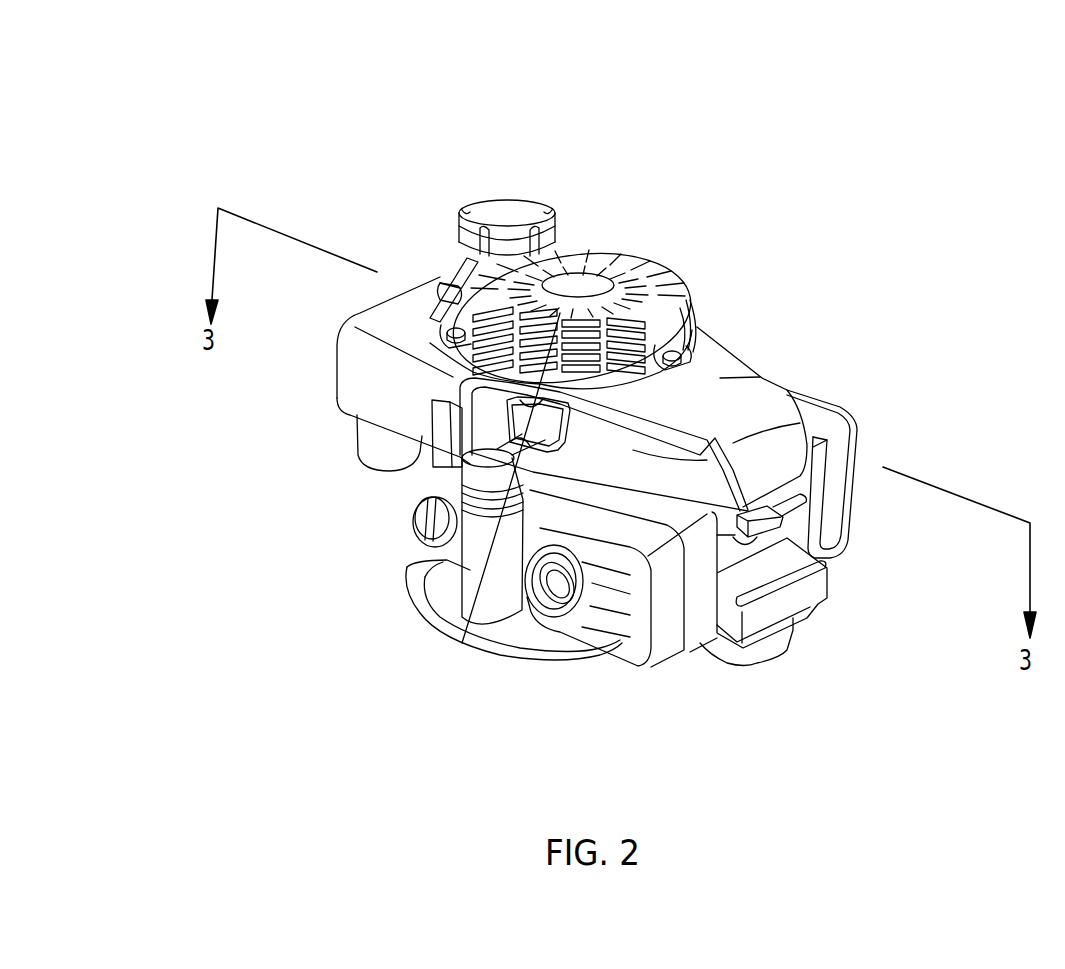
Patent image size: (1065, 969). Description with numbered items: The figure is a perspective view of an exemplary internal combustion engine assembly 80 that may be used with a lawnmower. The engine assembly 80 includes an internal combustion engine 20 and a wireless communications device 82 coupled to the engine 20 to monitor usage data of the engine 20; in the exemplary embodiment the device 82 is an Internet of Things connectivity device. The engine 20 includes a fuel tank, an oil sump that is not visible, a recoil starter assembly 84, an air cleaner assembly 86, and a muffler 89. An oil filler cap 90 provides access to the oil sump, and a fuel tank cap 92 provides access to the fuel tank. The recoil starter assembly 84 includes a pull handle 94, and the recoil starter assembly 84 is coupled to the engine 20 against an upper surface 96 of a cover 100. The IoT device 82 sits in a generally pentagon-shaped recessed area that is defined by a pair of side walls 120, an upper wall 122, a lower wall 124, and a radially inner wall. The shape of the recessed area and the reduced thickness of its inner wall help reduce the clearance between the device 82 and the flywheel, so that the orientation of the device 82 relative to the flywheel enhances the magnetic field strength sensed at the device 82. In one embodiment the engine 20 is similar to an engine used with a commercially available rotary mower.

The internal combustion engine assembly 80 is at (762, 126).
The internal combustion engine 20 is at (733, 382).
The upper surface 96 is at (733, 400).
The fuel tank cap 92 is at (510, 212).
The pull handle 94 is at (430, 292).
The recoil starter assembly 84 is at (650, 270).
The upper wall 122 is at (560, 313).
The wireless communications device 82 is at (520, 428).
The oil filler cap 90 is at (410, 520).
The side walls 120 is at (462, 643).
The lower wall 124 is at (421, 601).
The muffler 89 is at (640, 633).
The air cleaner assembly 86 is at (857, 450).
The cover 100 is at (783, 458).